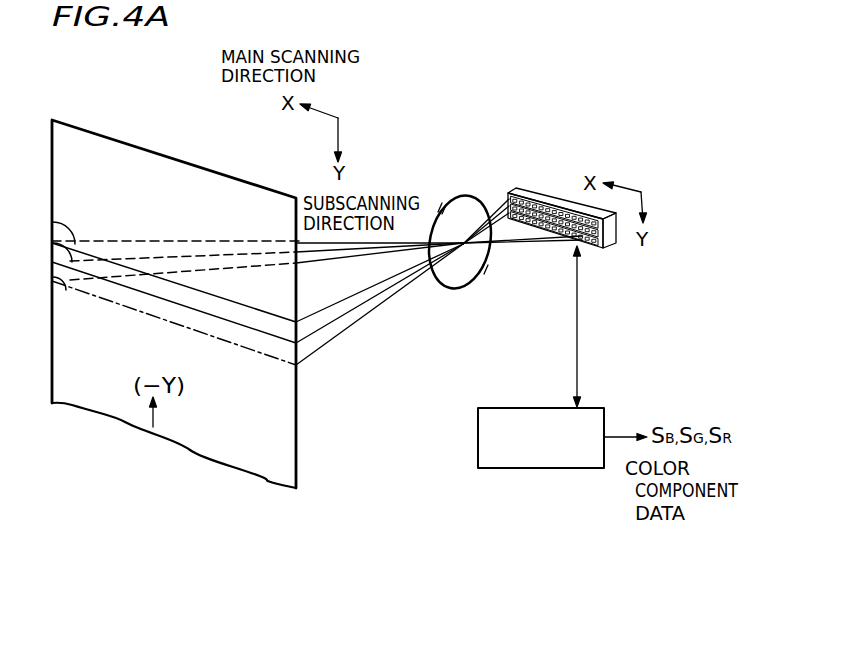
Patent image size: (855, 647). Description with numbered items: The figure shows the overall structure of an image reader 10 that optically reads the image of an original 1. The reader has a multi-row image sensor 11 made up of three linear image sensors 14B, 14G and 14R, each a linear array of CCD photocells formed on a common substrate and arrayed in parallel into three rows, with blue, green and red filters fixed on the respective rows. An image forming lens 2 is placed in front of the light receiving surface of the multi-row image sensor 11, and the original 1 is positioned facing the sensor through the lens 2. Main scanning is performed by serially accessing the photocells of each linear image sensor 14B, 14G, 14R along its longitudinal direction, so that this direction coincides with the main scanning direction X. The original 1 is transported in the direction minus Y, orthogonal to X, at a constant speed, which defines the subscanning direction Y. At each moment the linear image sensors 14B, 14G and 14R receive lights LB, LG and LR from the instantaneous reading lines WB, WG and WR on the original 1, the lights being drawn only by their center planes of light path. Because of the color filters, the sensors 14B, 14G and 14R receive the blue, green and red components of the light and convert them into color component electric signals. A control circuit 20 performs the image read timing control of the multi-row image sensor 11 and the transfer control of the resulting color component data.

The original 1 is at (296, 413).
The image forming lens 2 is at (449, 196).
The image reader 10 is at (558, 178).
The multi-row image sensor 11 is at (535, 190).
The linear image sensor 14B is at (611, 226).
The linear image sensor 14G is at (606, 237).
The linear image sensor 14R is at (606, 247).
The control circuit 20 is at (588, 410).
The instantaneous reading line WR is at (56, 222).
The instantaneous reading line WG is at (52, 240).
The instantaneous reading line WB is at (52, 280).
The light LR is at (357, 295).
The light LG is at (347, 313).
The light LB is at (335, 338).